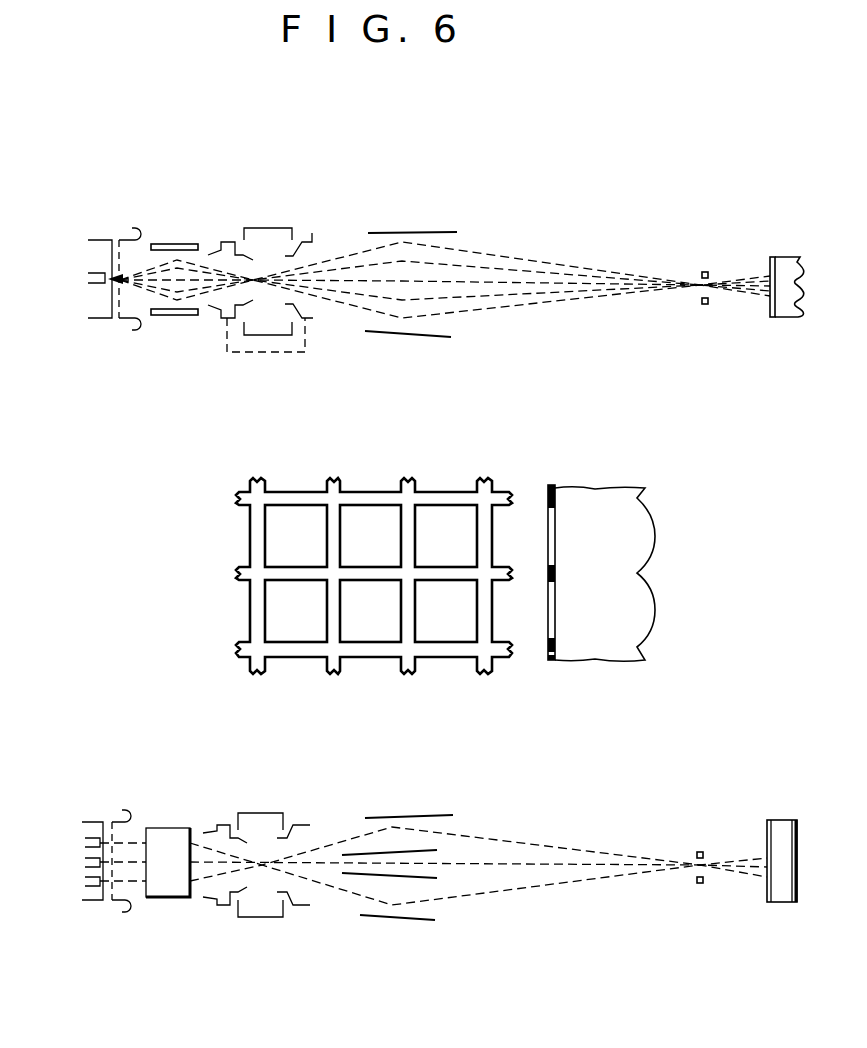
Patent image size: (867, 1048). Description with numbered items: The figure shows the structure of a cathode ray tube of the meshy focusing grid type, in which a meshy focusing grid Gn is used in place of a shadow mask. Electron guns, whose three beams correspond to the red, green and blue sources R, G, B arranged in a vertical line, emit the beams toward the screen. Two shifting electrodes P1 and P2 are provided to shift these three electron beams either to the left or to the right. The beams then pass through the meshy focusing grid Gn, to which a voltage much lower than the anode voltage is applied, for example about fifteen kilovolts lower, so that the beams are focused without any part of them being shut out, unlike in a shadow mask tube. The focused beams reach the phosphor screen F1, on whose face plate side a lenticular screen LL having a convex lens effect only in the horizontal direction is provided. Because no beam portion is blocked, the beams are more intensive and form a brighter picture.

The shifting electrode P1 is at (175, 315).
The shifting electrode P2 is at (175, 244).
The meshy focusing grid Gn is at (705, 272).
The lenticular screen LL is at (784, 270).
The phosphor screen F1 is at (550, 661).
The red cathode R is at (85, 843).
The green cathode G is at (85, 862).
The blue cathode B is at (85, 881).